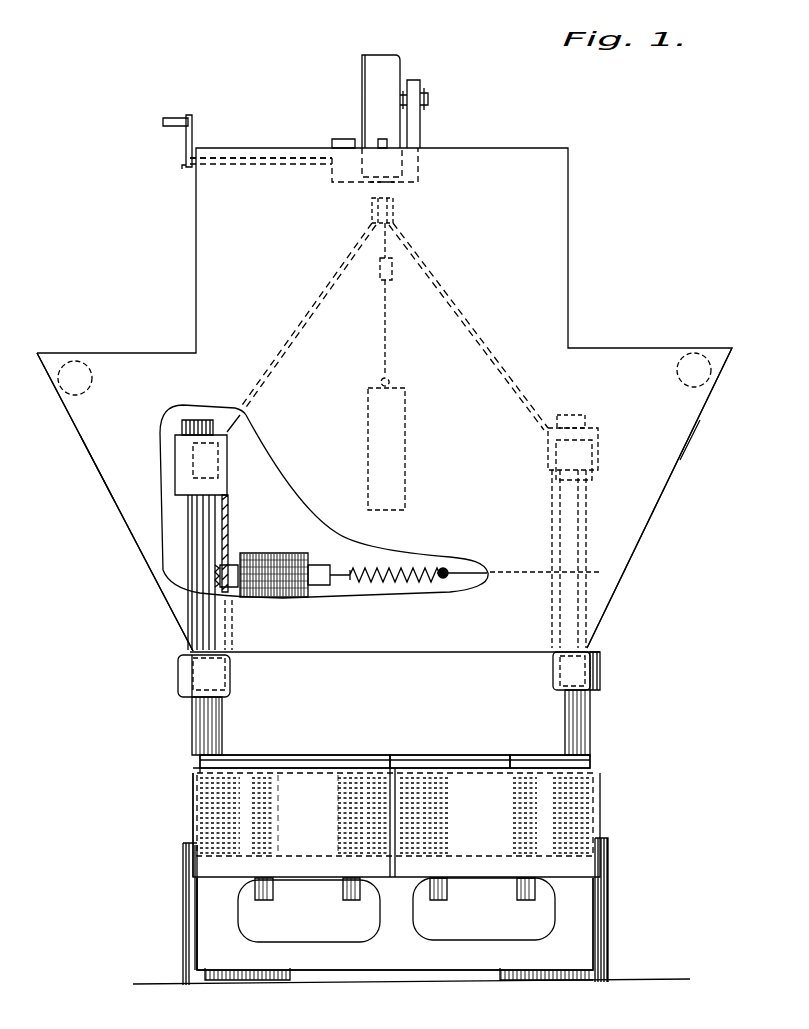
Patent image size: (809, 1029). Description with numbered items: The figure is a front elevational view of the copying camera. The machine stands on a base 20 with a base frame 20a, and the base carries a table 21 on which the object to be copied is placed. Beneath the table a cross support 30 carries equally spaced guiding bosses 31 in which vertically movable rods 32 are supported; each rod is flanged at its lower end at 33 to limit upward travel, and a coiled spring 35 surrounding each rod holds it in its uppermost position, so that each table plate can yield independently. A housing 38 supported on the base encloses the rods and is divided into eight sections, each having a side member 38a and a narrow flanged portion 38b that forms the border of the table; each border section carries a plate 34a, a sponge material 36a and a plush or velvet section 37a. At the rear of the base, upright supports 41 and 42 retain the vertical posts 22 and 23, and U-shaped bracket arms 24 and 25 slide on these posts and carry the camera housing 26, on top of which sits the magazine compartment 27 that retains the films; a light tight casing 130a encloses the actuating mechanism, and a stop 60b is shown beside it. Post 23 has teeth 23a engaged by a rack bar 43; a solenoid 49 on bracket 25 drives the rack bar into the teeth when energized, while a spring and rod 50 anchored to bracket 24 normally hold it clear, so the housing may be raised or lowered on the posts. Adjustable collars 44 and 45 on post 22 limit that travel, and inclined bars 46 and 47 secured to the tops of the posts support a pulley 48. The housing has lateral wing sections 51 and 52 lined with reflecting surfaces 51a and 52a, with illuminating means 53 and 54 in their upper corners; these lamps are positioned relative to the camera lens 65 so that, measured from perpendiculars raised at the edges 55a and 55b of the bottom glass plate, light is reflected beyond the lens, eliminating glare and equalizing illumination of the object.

The base 20 is at (400, 980).
The base frame 20a is at (578, 906).
The table 21 is at (456, 750).
The upright post 22 is at (600, 718).
The upright post 23 is at (200, 718).
The teeth 23a is at (215, 568).
The bracket arm 24 is at (552, 495).
The bracket arm 25 is at (230, 503).
The camera housing 26 is at (82, 462).
The magazine compartment 27 is at (387, 48).
The cross support 30 is at (304, 860).
The guiding boss 31 is at (272, 886).
The rod 32 is at (445, 790).
The flange 33 is at (432, 903).
The plate 34a is at (290, 762).
The coiled spring 35 is at (448, 812).
The sponge material 36a is at (358, 762).
The plush or velvet section 37a is at (508, 762).
The housing 38 is at (606, 814).
The side member 38a is at (192, 800).
The flanged portion 38b is at (196, 770).
The upright support 41 is at (608, 935).
The upright support 42 is at (185, 905).
The rack bar 43 is at (236, 562).
The adjustable collar 44 is at (178, 647).
The adjustable collar 45 is at (182, 590).
The inclined bar 46 is at (465, 305).
The inclined bar 47 is at (305, 300).
The pulley 48 is at (396, 210).
The solenoid 49 is at (300, 598).
The spring and rod 50 is at (443, 566).
The wing section 51 is at (675, 353).
The reflecting surface 51a is at (682, 452).
The wing section 52 is at (68, 353).
The reflecting surface 52a is at (90, 473).
The illuminating means 53 is at (713, 378).
The illuminating means 54 is at (60, 383).
The edge of glass plate 55a is at (200, 412).
The edge of glass plate 55b is at (572, 412).
The stop 60b is at (380, 140).
The camera lens 65 is at (372, 185).
The light tight casing 130a is at (343, 170).